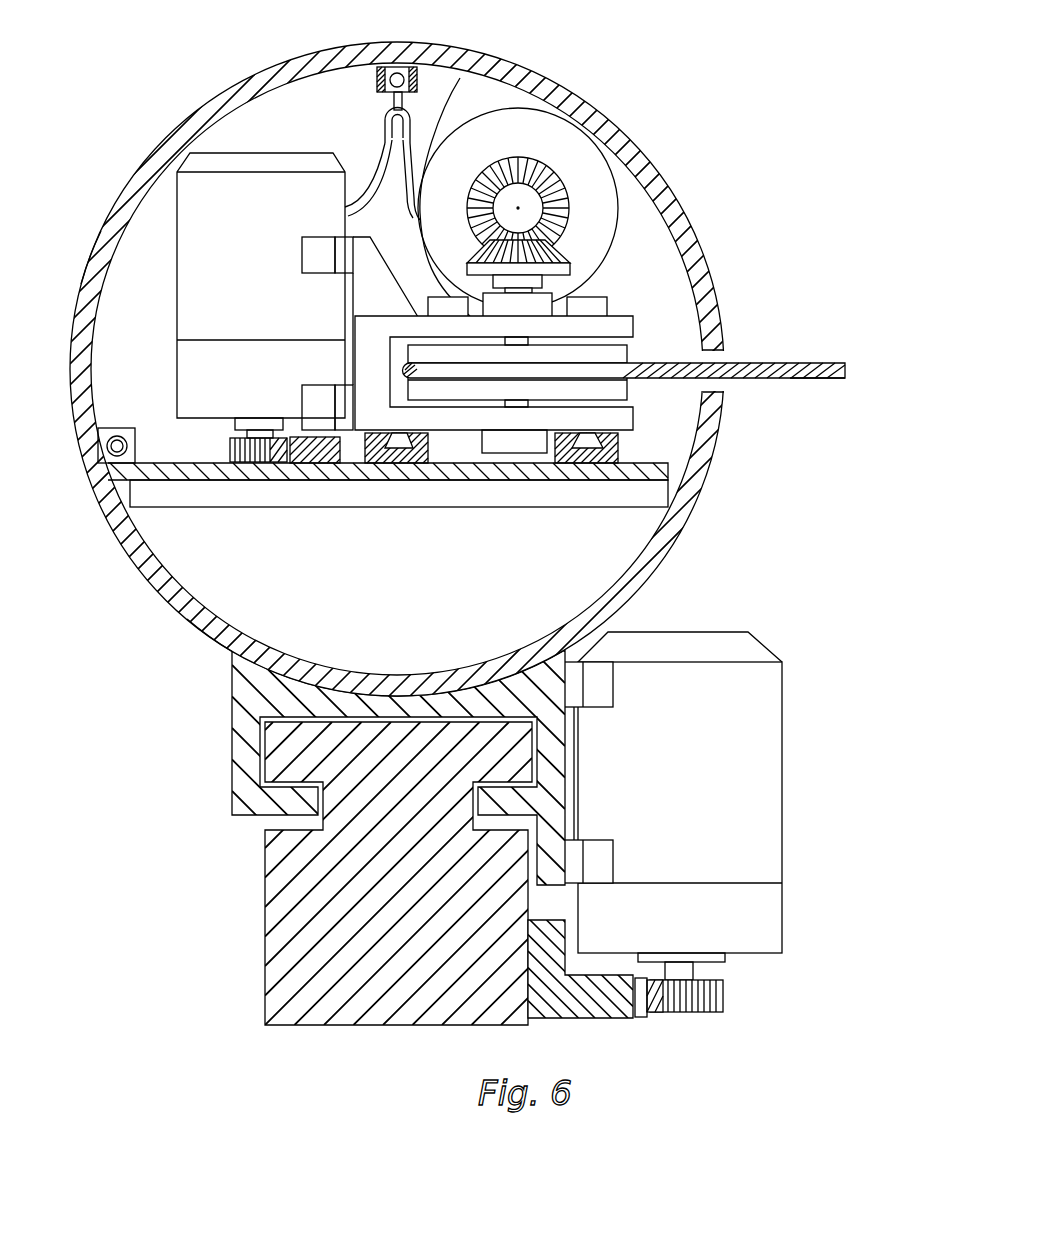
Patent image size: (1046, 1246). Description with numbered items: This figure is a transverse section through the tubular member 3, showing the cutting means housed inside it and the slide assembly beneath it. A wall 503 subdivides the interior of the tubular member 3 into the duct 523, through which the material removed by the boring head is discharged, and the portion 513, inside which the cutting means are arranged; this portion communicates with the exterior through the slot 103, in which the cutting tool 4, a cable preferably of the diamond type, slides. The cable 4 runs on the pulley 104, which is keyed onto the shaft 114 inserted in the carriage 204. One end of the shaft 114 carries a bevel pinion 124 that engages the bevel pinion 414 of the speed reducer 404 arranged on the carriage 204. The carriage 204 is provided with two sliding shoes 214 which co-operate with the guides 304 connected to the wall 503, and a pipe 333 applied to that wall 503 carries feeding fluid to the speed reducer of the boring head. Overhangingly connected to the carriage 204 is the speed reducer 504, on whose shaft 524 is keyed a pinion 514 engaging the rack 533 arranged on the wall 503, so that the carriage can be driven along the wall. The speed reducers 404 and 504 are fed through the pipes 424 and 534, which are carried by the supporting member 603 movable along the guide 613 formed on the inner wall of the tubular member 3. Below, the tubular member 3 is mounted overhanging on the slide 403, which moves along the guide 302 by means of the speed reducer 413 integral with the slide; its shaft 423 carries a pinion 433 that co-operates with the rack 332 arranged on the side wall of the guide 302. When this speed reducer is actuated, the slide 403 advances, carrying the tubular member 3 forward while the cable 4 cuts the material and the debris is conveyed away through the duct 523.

The tubular member 3 is at (132, 190).
The cutting tool (cable) 4 is at (795, 378).
The slot 103 is at (727, 355).
The pulley 104 is at (623, 352).
The shaft 114 is at (515, 407).
The bevel pinion 124 is at (565, 252).
The carriage 204 is at (630, 316).
The sliding shoes 214 is at (386, 463).
The guide 302 is at (270, 947).
The guides 304 is at (402, 448).
The rack 332 is at (605, 1018).
The pipe 333 is at (118, 428).
The slide 403 is at (240, 702).
The speed reducer 404 is at (548, 133).
The speed reducer 413 is at (790, 715).
The bevel pinion 414 is at (570, 185).
The shaft 423 is at (692, 970).
The pipe 424 is at (458, 82).
The pinion 433 is at (722, 1000).
The wall 503 is at (193, 481).
The speed reducer 504 is at (253, 180).
The portion 513 is at (135, 258).
The pinion 514 is at (258, 462).
The duct 523 is at (210, 590).
The shaft 524 is at (258, 418).
The rack 533 is at (314, 463).
The pipe 534 is at (373, 178).
The supporting member 603 is at (378, 70).
The guide 613 is at (415, 68).